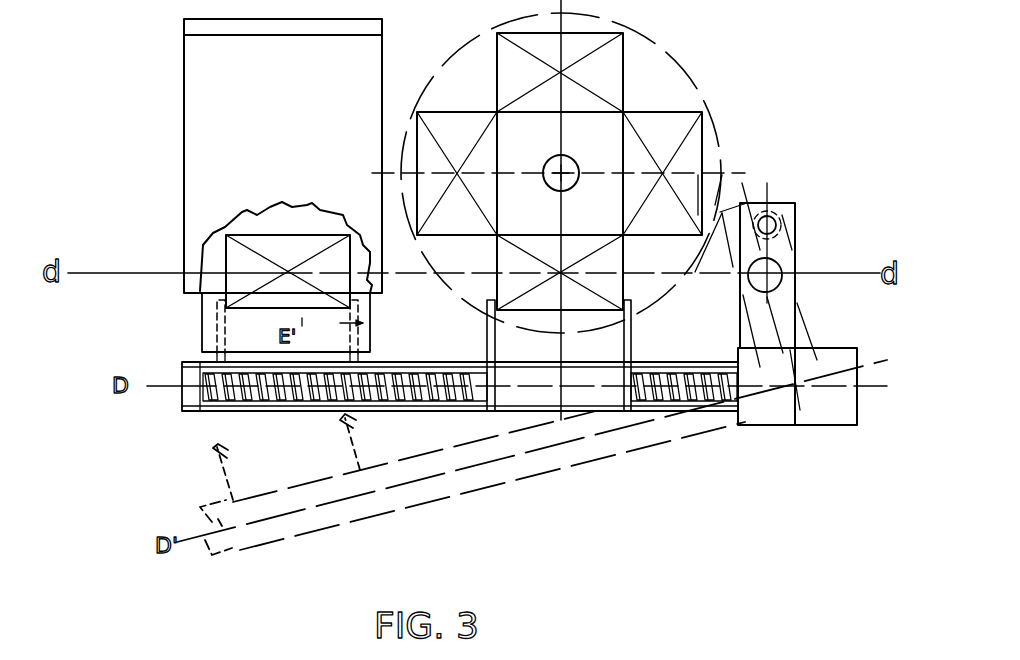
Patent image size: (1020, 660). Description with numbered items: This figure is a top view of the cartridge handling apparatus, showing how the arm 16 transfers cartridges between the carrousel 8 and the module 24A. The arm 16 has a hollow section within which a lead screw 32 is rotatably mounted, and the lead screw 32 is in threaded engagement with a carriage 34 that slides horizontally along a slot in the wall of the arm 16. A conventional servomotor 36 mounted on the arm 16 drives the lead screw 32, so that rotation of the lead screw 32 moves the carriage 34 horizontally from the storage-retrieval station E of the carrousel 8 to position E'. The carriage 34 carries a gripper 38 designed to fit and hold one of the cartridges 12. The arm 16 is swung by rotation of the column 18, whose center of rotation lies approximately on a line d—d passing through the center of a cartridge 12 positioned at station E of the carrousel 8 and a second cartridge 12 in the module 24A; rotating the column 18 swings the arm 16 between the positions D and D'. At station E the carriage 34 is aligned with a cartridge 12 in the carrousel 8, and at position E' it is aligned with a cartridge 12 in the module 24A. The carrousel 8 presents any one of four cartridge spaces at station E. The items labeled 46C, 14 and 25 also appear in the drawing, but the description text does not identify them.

The module 24A is at (205, 112).
The rotor wheel 46C is at (682, 35).
The carrousel 8 is at (688, 97).
The wheel axle 14 is at (569, 163).
The cartridge 12 is at (288, 271).
The pin 25 is at (778, 214).
The column 18 is at (779, 266).
The lead screw 32 is at (388, 380).
The carriage 34 is at (608, 378).
The arm 16 is at (742, 430).
The servomotor 36 is at (820, 412).
The gripper 38 is at (217, 455).